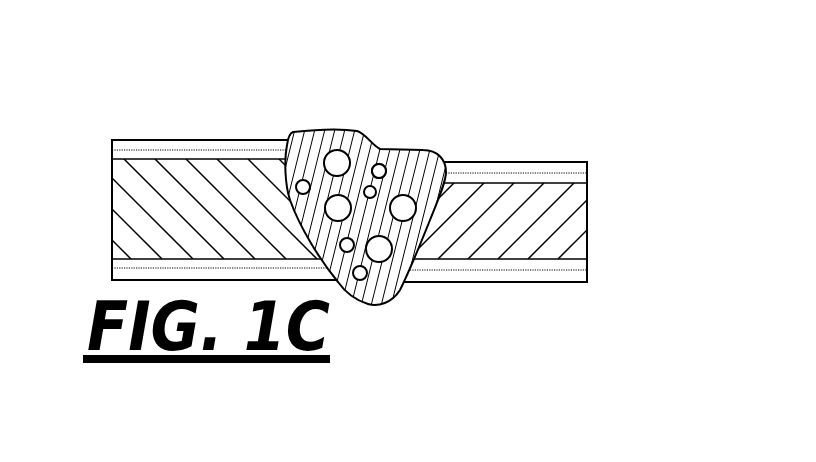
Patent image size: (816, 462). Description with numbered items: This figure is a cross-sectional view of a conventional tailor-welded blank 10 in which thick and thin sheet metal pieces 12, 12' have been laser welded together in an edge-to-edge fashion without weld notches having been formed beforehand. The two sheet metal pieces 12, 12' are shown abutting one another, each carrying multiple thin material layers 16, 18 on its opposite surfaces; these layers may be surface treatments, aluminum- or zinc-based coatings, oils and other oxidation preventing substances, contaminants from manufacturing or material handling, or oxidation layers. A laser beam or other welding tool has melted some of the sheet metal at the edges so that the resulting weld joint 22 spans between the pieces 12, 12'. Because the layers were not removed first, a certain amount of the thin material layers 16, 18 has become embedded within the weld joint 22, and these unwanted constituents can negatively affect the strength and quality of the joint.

The tailor-welded blank 10 is at (94, 85).
The sheet metal piece 12 is at (229, 210).
The sheet metal piece 12' is at (524, 218).
The thin material layer 16 is at (370, 187).
The thin material layer 18 is at (405, 212).
The weld joint 22 is at (387, 172).